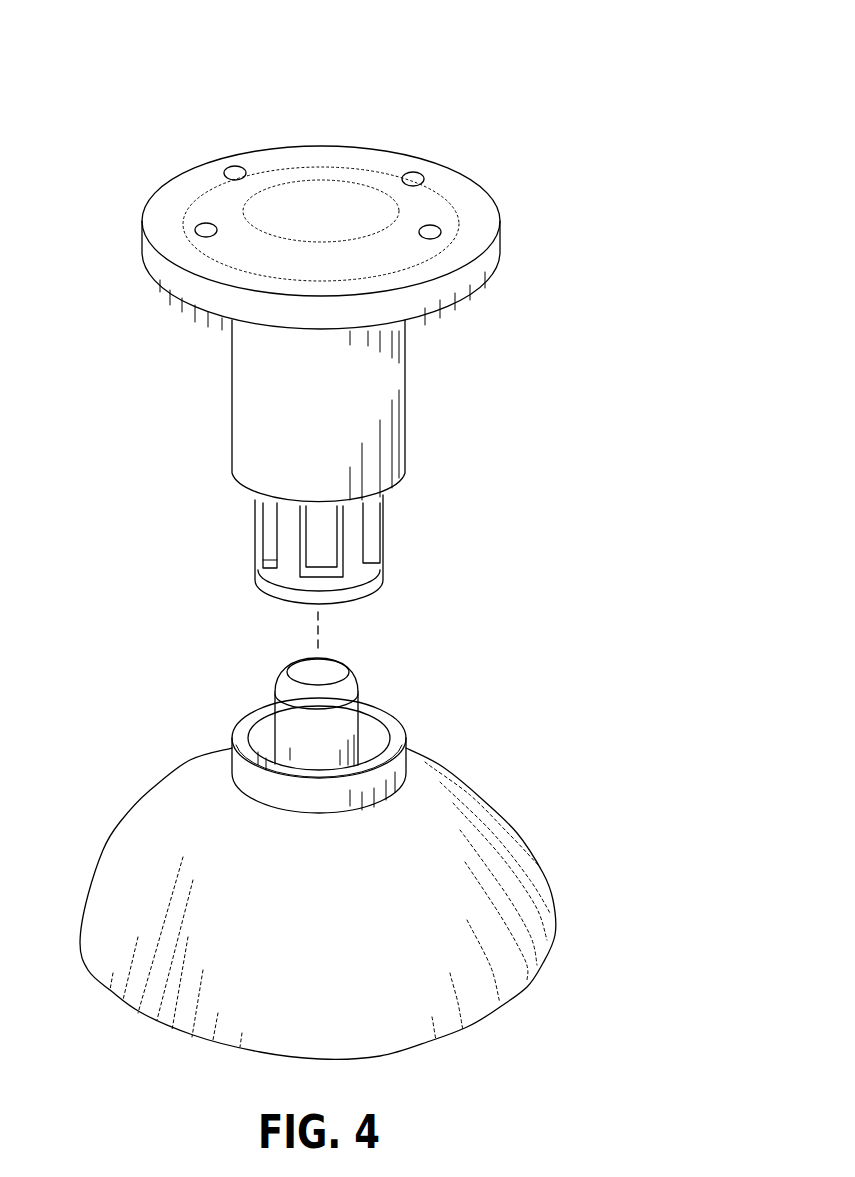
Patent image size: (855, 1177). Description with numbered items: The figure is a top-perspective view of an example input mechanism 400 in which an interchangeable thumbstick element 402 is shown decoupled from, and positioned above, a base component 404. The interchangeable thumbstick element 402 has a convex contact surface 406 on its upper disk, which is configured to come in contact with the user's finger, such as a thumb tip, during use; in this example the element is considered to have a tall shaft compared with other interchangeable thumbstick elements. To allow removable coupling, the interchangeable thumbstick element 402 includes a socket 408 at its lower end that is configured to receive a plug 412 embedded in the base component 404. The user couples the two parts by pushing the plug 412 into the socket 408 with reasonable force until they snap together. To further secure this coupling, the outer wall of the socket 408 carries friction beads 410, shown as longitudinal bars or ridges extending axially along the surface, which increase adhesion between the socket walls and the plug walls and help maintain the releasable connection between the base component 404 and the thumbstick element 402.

The input mechanism 400 is at (319, 52).
The interchangeable thumbstick element 402 is at (413, 317).
The base component 404 is at (127, 831).
The convex contact surface 406 is at (365, 208).
The socket 408 is at (413, 474).
The friction beads 410 is at (280, 567).
The plug 412 is at (350, 688).